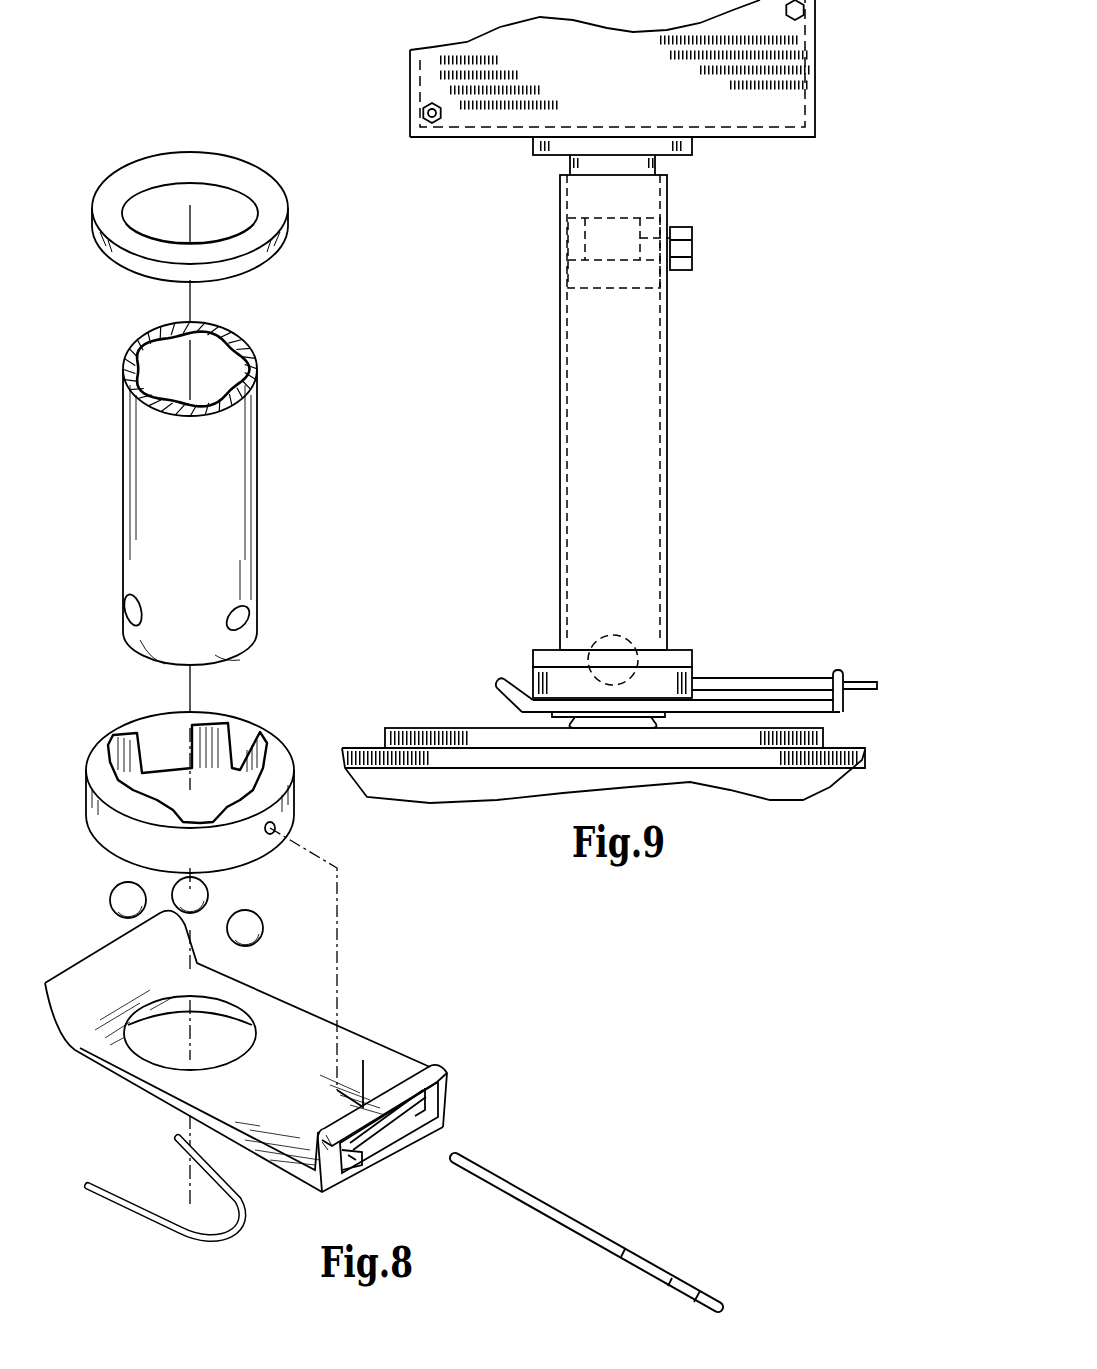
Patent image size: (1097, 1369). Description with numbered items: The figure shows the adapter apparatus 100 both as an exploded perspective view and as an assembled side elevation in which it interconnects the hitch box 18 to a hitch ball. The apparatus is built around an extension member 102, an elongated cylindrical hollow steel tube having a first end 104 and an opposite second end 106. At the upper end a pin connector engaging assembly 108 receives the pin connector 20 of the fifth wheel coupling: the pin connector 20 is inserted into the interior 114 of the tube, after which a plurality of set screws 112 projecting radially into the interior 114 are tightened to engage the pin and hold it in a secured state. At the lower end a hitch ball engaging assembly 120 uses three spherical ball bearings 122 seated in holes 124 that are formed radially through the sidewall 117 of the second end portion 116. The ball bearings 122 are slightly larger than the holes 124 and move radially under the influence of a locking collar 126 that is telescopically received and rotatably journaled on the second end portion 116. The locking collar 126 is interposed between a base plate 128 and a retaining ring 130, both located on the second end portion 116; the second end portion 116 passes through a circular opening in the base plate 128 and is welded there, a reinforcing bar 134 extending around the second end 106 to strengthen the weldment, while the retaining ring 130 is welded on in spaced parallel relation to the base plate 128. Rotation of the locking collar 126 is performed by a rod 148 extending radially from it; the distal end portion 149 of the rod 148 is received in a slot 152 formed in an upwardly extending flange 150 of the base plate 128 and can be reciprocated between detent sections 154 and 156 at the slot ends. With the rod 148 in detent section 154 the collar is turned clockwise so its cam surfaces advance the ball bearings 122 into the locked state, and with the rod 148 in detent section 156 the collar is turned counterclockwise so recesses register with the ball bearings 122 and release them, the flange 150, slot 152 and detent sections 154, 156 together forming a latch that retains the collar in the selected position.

In FIG. 9, the hitch box 18 is at (588, 97).
In FIG. 9, the pin connector 20 is at (580, 162).
In FIG. 8, the adapter apparatus 100 is at (297, 480).
In FIG. 9, the adapter apparatus 100 is at (748, 335).
In FIG. 8, the extension member 102 is at (143, 487).
In FIG. 9, the extension member 102 is at (668, 380).
In FIG. 9, the first end 104 is at (640, 173).
In FIG. 8, the second end 106 is at (152, 668).
In FIG. 9, the pin connector engaging assembly 108 is at (712, 218).
In FIG. 9, the set screws 112 is at (700, 253).
In FIG. 9, the interior 114 is at (583, 203).
In FIG. 8, the second end portion 116 is at (240, 574).
In FIG. 8, the sidewall 117 is at (215, 655).
In FIG. 9, the hitch ball engaging assembly 120 is at (710, 620).
In FIG. 8, the spherical ball bearings 122 is at (128, 900).
In FIG. 8, the holes 124 is at (130, 608).
In FIG. 8, the locking collar 126 is at (305, 718).
In FIG. 9, the locking collar 126 is at (533, 676).
In FIG. 8, the base plate 128 is at (398, 1072).
In FIG. 9, the base plate 128 is at (705, 705).
In FIG. 8, the retaining ring 130 is at (303, 190).
In FIG. 9, the retaining ring 130 is at (548, 650).
In FIG. 8, the reinforcing bar 134 is at (148, 1238).
In FIG. 8, the rod 148 is at (552, 1210).
In FIG. 9, the rod 148 is at (750, 678).
In FIG. 8, the distal end portion 149 is at (697, 1292).
In FIG. 9, the distal end portion 149 is at (865, 677).
In FIG. 8, the flange 150 is at (432, 1145).
In FIG. 8, the slot 152 is at (435, 1070).
In FIG. 8, the detent section 154 is at (360, 1175).
In FIG. 8, the detent section 156 is at (395, 1104).